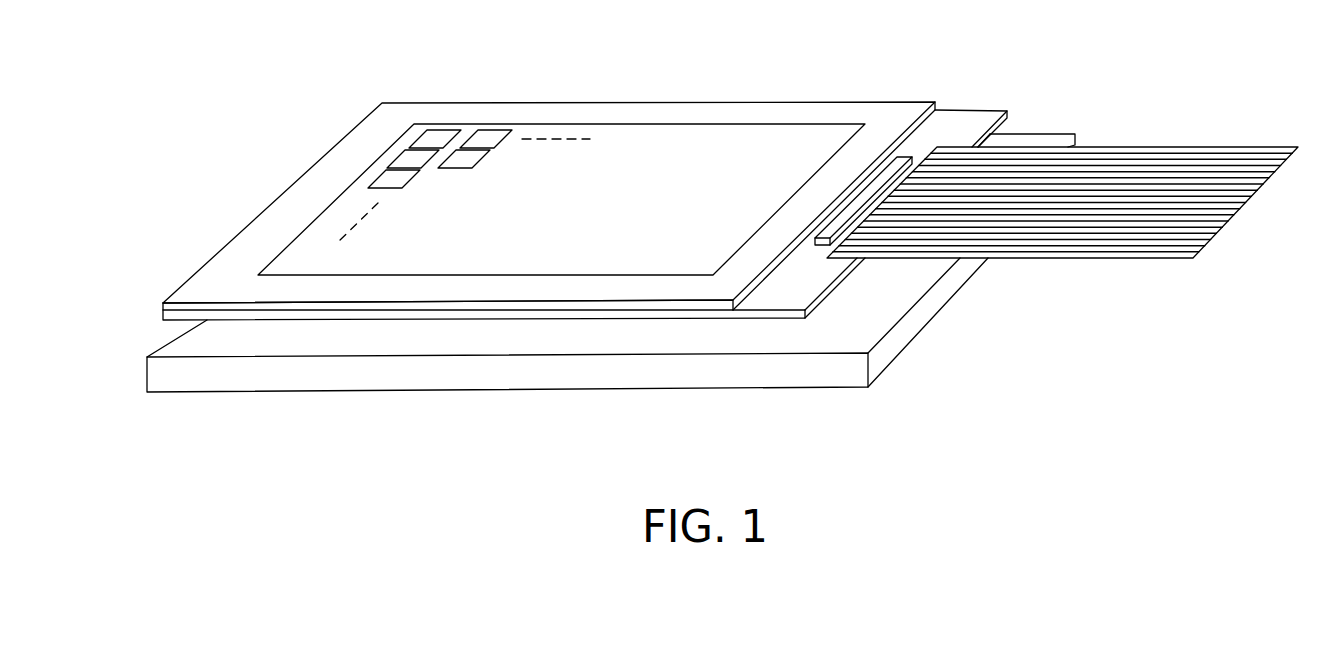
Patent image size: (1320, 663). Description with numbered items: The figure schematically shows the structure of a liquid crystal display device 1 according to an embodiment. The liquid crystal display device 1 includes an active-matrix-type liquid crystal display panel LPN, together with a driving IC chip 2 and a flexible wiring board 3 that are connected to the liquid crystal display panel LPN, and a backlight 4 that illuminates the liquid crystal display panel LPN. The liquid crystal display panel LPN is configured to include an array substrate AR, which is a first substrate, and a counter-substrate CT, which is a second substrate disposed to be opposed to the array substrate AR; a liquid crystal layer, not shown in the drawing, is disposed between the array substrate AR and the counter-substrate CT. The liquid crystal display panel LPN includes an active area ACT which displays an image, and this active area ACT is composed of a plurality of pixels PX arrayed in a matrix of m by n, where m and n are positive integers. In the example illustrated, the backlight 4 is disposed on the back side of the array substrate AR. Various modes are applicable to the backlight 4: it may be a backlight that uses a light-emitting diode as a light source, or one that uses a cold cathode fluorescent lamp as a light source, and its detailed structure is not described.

The liquid crystal display device 1 is at (1030, 66).
The driving IC chip 2 is at (897, 158).
The flexible wiring board 3 is at (1229, 147).
The backlight 4 is at (172, 377).
The liquid crystal display panel LPN is at (585, 249).
The array substrate AR is at (585, 249).
The counter-substrate CT is at (583, 306).
The active area ACT is at (561, 249).
The pixel PX is at (444, 136).